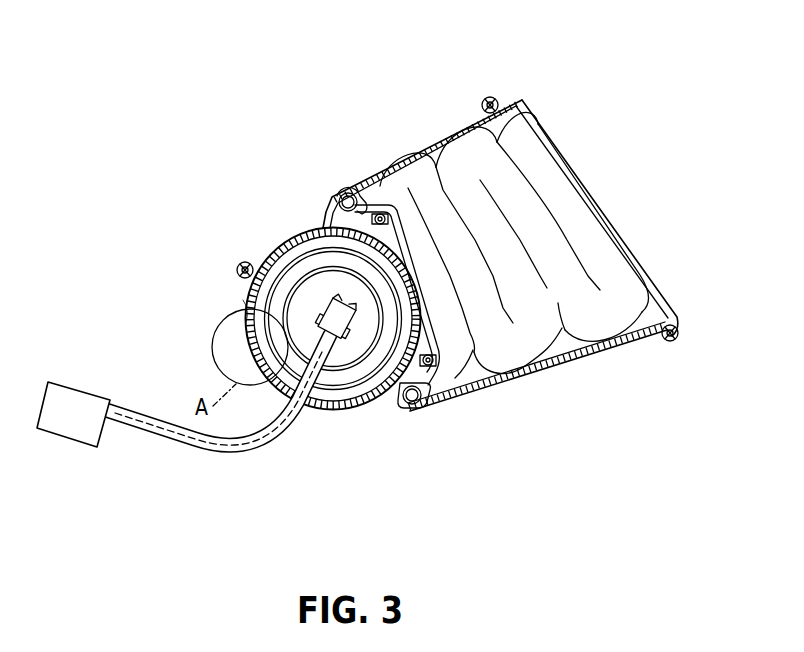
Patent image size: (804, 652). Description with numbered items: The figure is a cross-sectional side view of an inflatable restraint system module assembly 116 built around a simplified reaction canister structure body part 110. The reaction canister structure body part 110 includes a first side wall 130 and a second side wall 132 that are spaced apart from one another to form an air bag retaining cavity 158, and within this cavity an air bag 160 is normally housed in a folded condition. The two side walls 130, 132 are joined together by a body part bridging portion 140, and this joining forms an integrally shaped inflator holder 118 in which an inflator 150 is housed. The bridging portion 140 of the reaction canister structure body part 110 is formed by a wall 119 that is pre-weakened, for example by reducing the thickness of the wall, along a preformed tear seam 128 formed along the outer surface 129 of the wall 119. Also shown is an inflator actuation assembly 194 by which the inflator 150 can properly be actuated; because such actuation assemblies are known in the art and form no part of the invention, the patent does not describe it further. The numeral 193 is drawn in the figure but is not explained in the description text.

The reaction canister structure body part 110 is at (505, 238).
The inflatable restraint system module assembly 116 is at (398, 100).
The inflator holder 118 is at (302, 222).
The wall 119 is at (332, 409).
The preformed tear seam 128 is at (240, 352).
The outer surface 129 is at (243, 320).
The first side wall 130 is at (491, 258).
The second side wall 132 is at (573, 360).
The body part bridging portion 140 is at (266, 247).
The inflator 150 is at (357, 348).
The air bag retaining cavity 158 is at (425, 145).
The air bag 160 is at (528, 348).
The side wall 193 is at (653, 283).
The inflator actuation assembly 194 is at (187, 445).